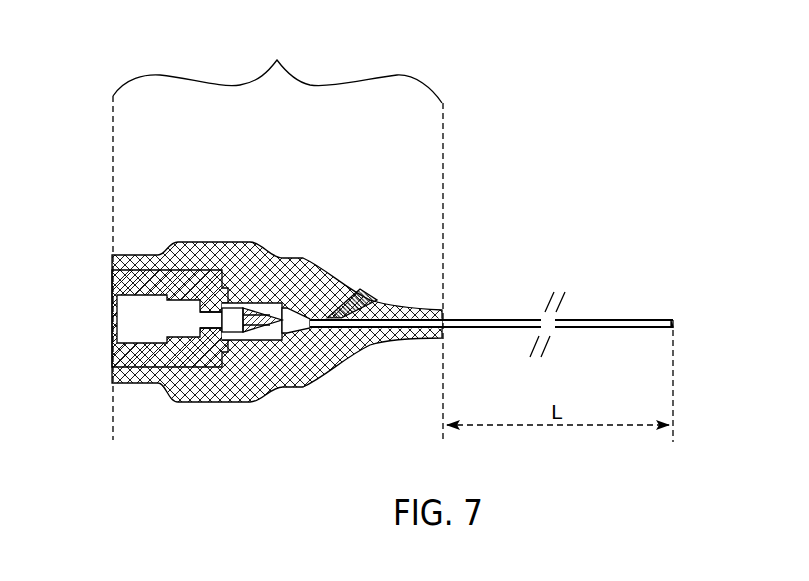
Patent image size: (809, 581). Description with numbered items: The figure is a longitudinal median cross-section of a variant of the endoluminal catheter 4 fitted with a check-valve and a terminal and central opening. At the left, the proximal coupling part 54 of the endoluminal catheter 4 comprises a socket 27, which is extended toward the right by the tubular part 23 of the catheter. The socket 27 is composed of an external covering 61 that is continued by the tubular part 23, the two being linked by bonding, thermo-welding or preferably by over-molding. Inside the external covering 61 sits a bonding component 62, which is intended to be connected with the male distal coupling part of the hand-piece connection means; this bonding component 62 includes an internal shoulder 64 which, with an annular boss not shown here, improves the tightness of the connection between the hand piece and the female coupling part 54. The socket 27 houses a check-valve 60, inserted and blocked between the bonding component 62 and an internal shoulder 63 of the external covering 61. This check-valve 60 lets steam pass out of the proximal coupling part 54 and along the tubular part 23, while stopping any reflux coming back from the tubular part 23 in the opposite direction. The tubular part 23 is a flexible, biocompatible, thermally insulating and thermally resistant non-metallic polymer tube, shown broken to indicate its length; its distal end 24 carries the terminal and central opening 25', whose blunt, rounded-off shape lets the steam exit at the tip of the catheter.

The proximal coupling part 54 is at (278, 238).
The socket 27 is at (308, 257).
The check-valve 60 is at (289, 312).
The external covering 61 is at (310, 370).
The bonding component 62 is at (120, 356).
The internal shoulder 63 is at (228, 346).
The internal shoulder 64 is at (199, 333).
The tubular part 23 is at (607, 320).
The distal end 24 is at (676, 317).
The terminal and central opening 25' is at (725, 314).
The endoluminal catheter 4 is at (383, 452).